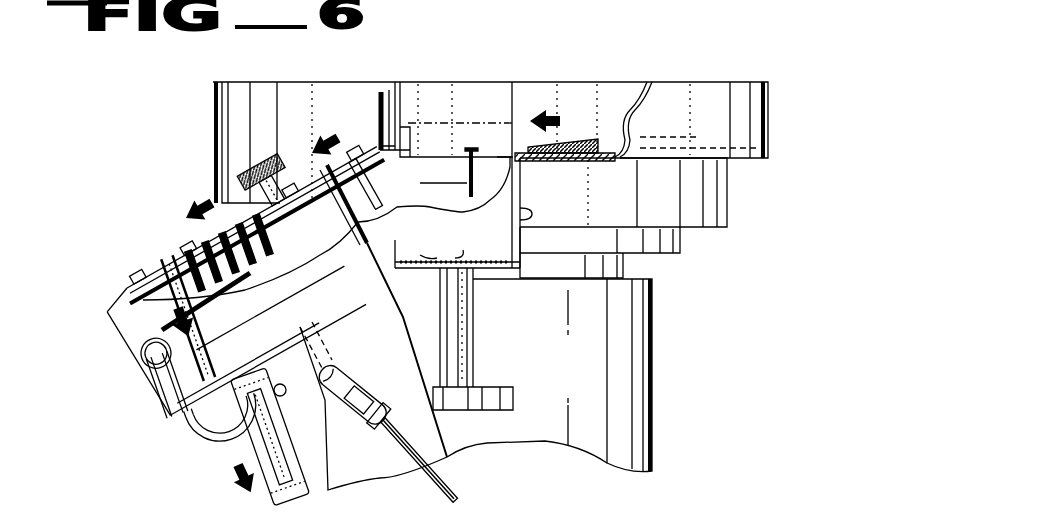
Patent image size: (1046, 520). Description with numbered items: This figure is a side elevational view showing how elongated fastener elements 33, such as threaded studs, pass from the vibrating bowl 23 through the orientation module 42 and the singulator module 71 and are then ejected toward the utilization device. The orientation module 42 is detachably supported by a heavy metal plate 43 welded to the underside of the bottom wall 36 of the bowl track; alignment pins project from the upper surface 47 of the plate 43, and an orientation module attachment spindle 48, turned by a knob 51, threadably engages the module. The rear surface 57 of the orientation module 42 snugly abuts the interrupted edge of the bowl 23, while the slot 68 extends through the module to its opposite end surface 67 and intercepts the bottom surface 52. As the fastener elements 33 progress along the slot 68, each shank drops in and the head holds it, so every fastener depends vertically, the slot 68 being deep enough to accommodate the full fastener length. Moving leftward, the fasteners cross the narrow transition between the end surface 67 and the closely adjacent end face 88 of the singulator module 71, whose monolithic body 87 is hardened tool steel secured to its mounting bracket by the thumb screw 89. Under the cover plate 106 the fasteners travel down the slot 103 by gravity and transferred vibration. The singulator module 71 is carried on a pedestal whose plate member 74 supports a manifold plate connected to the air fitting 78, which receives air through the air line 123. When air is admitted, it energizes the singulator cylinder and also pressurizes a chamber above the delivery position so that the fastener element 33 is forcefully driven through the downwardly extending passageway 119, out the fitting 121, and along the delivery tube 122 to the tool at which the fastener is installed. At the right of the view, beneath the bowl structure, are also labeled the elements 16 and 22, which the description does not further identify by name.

The bowl 23 is at (543, 64).
The fastener elements 33 is at (566, 141).
The slot 68 is at (452, 165).
The cover plate 106 is at (300, 172).
The bottom wall of the track 36 is at (604, 161).
The frame 16 is at (623, 268).
The plate 22 is at (653, 340).
The orientation module 42 is at (483, 250).
The rear surface of the orientation module 57 is at (520, 215).
The end surface of the orientation module 67 is at (364, 243).
The bottom surface 52 is at (437, 258).
The upper surface of the plate 47 is at (460, 258).
The heavy metal plate 43 is at (425, 280).
The orientation module attachment spindle 48 is at (468, 345).
The knob 51 is at (513, 398).
The plate member 74 is at (418, 433).
The end face 88 is at (358, 228).
The air line 123 is at (450, 478).
The air fitting 78 is at (345, 368).
The slot 103 is at (330, 229).
The thumb screw 89 is at (241, 167).
The singulator module 71 is at (158, 254).
The monolithic body 87 is at (126, 318).
The downwardly extending passageway 119 is at (236, 334).
The fitting 121 is at (224, 390).
The delivery tube 122 is at (288, 448).